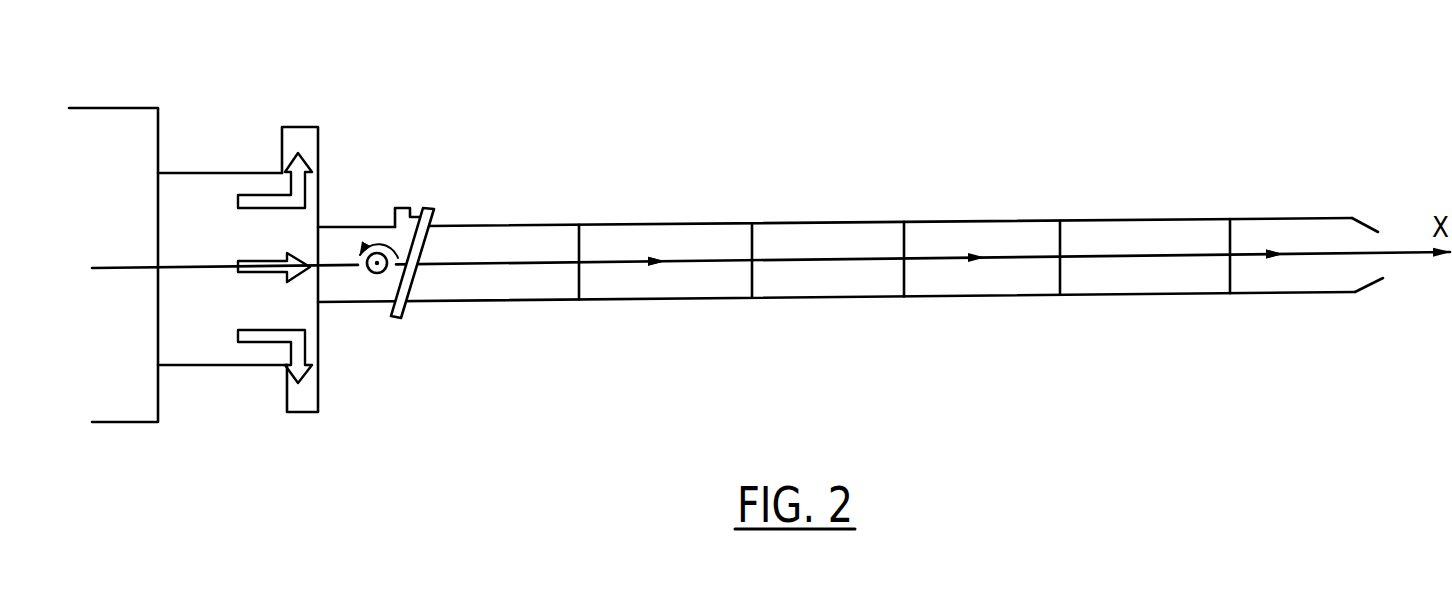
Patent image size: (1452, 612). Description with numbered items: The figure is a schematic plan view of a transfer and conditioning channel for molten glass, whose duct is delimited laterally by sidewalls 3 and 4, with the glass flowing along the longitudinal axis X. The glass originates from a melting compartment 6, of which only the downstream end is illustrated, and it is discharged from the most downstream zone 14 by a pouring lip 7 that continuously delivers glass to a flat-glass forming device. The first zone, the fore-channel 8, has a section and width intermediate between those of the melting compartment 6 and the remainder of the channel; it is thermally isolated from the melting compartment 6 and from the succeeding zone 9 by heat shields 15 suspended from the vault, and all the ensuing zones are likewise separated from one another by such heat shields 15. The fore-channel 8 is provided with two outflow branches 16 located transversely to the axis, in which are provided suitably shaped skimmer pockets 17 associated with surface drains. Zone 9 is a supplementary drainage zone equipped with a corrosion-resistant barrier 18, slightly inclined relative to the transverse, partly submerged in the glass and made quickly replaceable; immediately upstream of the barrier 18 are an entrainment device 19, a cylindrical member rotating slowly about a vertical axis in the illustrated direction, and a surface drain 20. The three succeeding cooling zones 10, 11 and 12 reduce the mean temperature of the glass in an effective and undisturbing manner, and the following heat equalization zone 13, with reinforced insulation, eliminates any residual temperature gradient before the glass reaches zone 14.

The sidewall 3 is at (703, 220).
The sidewall 4 is at (650, 301).
The melting compartment 6 is at (117, 102).
The pouring lip 7 is at (1380, 232).
The fore-channel 8 is at (205, 187).
The supplementary drainage zone 9 is at (523, 248).
The cooling zone 10 is at (715, 248).
The cooling zone 11 is at (847, 245).
The cooling zone 12 is at (977, 243).
The heat equalization zone 13 is at (1138, 243).
The most downstream zone 14 is at (1283, 240).
The heat shield 15 is at (160, 247).
The outflow branch 16 is at (310, 157).
The skimmer pocket 17 is at (300, 123).
The barrier 18 is at (437, 214).
The entrainment device 19 is at (373, 274).
The surface drain 20 is at (415, 213).